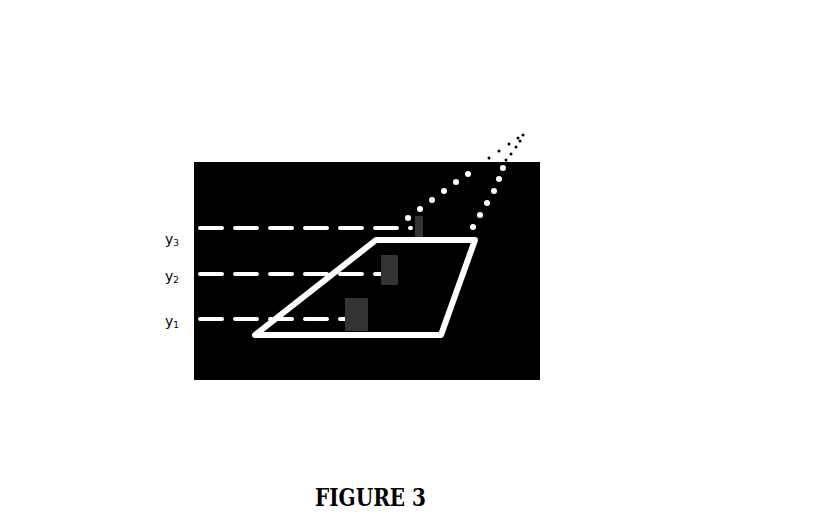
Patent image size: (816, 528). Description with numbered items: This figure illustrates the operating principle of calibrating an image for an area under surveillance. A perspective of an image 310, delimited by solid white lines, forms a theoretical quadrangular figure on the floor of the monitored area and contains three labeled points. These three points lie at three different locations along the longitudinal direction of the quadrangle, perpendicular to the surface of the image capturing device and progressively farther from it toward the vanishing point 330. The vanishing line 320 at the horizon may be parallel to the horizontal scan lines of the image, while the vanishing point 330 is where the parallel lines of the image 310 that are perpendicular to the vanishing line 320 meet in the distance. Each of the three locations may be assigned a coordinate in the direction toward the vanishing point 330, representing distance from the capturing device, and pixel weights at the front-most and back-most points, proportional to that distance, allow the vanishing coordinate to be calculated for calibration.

The image 310 is at (532, 287).
The vanishing line 320 is at (288, 153).
The vanishing point 330 is at (517, 128).